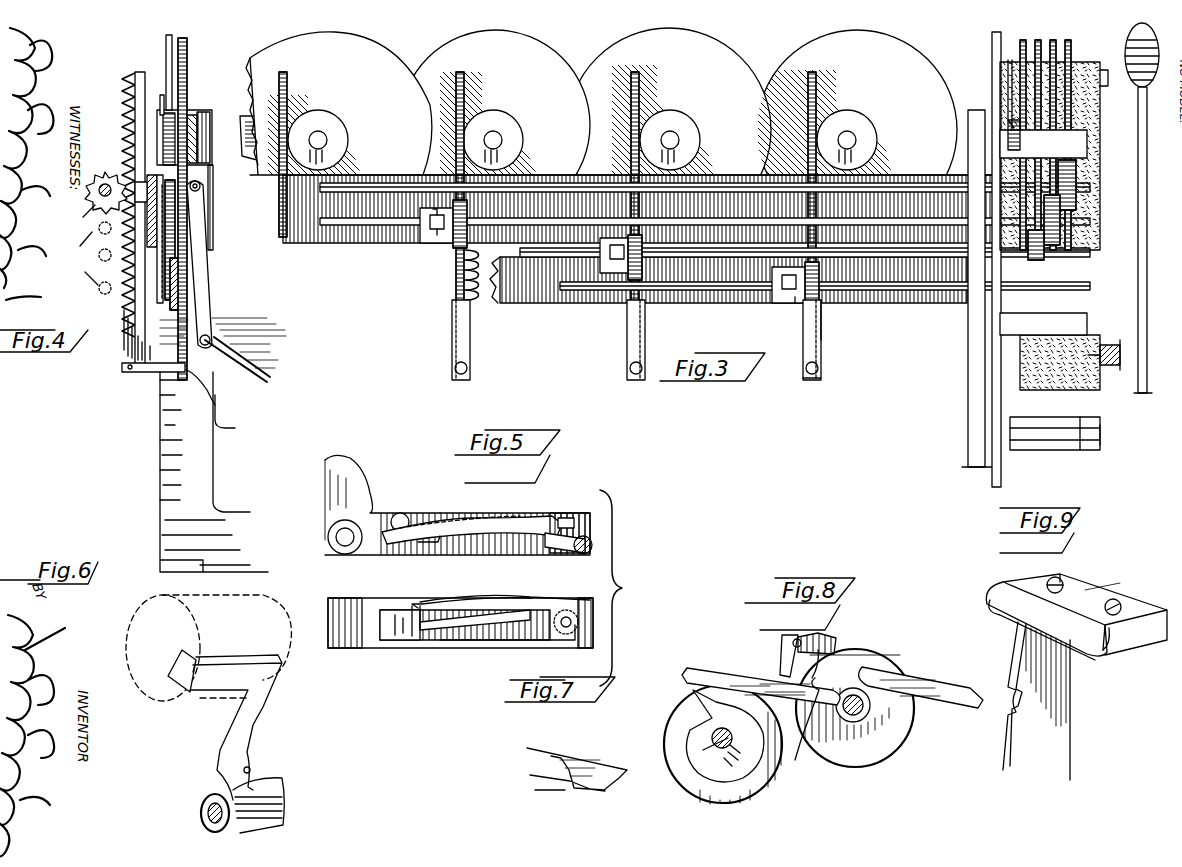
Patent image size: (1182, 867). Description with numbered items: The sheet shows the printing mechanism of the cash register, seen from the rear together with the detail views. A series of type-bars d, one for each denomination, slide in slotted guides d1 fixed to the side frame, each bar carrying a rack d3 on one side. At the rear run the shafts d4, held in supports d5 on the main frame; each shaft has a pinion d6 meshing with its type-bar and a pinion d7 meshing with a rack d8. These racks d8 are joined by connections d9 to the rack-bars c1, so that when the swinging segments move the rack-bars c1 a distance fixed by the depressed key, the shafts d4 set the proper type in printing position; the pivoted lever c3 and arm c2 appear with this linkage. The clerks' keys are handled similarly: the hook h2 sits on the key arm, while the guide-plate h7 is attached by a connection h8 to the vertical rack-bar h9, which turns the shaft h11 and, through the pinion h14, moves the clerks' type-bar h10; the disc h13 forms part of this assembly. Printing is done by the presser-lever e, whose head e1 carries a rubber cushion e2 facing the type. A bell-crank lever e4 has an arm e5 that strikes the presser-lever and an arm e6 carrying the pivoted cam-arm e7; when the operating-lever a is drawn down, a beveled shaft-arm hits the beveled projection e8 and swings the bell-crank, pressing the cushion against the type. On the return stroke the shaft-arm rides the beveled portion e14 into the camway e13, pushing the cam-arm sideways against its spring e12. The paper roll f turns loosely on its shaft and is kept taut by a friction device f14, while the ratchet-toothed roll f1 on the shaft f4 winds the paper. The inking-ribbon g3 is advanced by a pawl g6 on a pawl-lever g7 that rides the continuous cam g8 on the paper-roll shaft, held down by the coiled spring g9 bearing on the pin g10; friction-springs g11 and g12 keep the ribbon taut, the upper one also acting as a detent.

In FIG. 3, the operating-lever a is at (1138, 152).
In FIG. 3, the rack-bar c1 is at (480, 294).
In FIG. 4, the rack-bar c1 is at (186, 70).
In FIG. 4, the lever arm c2 is at (264, 378).
In FIG. 4, the lever c3 is at (208, 298).
In FIG. 3, the type member d is at (1040, 45).
In FIG. 3, the slotted guide d1 is at (1043, 144).
In FIG. 3, the rack d3 is at (780, 264).
In FIG. 3, the shaft d4 is at (921, 235).
In FIG. 4, the shaft d4 is at (100, 254).
In FIG. 3, the support d5 is at (780, 298).
In FIG. 3, the pinion d6 is at (1080, 197).
In FIG. 3, the pinion d7 is at (450, 251).
In FIG. 4, the pinion d7 is at (94, 176).
In FIG. 3, the rack d8 is at (460, 82).
In FIG. 4, the rack d8 is at (122, 95).
In FIG. 3, the connection d9 is at (472, 376).
In FIG. 4, the connection d9 is at (155, 375).
In FIG. 9, the presser-lever e is at (1050, 745).
In FIG. 5, the head e1 is at (408, 512).
In FIG. 9, the head e1 is at (1100, 592).
In FIG. 9, the rubber cushion e2 is at (991, 595).
In FIG. 5, the bell-crank lever e4 is at (377, 512).
In FIG. 5, the arm e5 is at (358, 470).
In FIG. 5, the arm e6 is at (545, 513).
In FIG. 7, the arm e6 is at (457, 638).
In FIG. 5, the cam-arm e7 is at (493, 518).
In FIG. 7, the cam-arm e7 is at (398, 610).
In FIG. 5, the beveled projection e8 is at (440, 543).
In FIG. 5, the spring e12 is at (550, 553).
In FIG. 7, the spring e12 is at (535, 600).
In FIG. 7, the inclined groove or recess e13 is at (520, 630).
In FIG. 7, the beveled portion e14 is at (500, 620).
In FIG. 6, the roll f is at (135, 634).
In FIG. 8, the paper-roll f1 is at (678, 736).
In FIG. 8, the shaft f4 is at (720, 740).
In FIG. 6, the friction device f14 is at (240, 720).
In FIG. 3, the inking-ribbon g3 is at (1110, 322).
In FIG. 8, the pawl g6 is at (823, 640).
In FIG. 8, the pawl-lever g7 is at (548, 800).
In FIG. 8, the continuous cam g8 is at (730, 731).
In FIG. 8, the coiled spring g9 is at (858, 675).
In FIG. 8, the pin g10 is at (807, 731).
In FIG. 3, the friction-spring g11 is at (1020, 70).
In FIG. 8, the friction-spring g11 is at (921, 675).
In FIG. 3, the friction-spring g12 is at (1014, 408).
In FIG. 3, the hook h2 is at (802, 304).
In FIG. 3, the guide-plate h7 is at (821, 340).
In FIG. 3, the connection h8 is at (815, 375).
In FIG. 3, the rack-bar h9 is at (816, 84).
In FIG. 3, the type-bar h10 is at (985, 83).
In FIG. 3, the shaft h11 is at (900, 295).
In FIG. 3, the disc h13 is at (601, 130).
In FIG. 3, the pinion h14 is at (1030, 290).